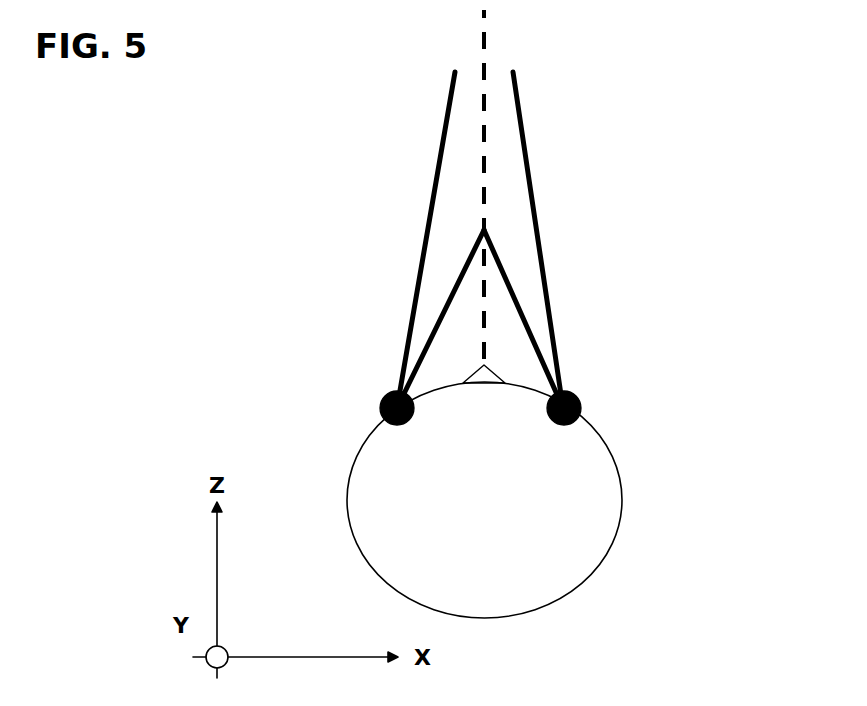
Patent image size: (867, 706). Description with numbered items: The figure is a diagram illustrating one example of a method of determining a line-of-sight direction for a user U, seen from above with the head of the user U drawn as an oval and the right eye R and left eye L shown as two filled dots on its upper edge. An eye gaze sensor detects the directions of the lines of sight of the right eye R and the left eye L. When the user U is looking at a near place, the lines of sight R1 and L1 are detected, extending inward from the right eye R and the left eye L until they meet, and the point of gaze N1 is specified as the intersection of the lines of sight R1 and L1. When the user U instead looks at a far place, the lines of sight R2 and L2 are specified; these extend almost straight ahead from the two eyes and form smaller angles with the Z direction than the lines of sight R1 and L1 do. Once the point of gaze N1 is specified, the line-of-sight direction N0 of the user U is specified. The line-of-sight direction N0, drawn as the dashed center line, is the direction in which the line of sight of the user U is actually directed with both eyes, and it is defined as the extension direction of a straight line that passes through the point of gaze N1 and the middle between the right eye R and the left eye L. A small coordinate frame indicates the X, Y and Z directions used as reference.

The line-of-sight direction N0 is at (484, 32).
The point of gaze N1 is at (486, 228).
The line of sight L2 is at (437, 197).
The line of sight R2 is at (530, 175).
The line of sight L1 is at (433, 330).
The line of sight R1 is at (530, 318).
The left eye L is at (381, 412).
The right eye R is at (581, 411).
The user U is at (613, 545).